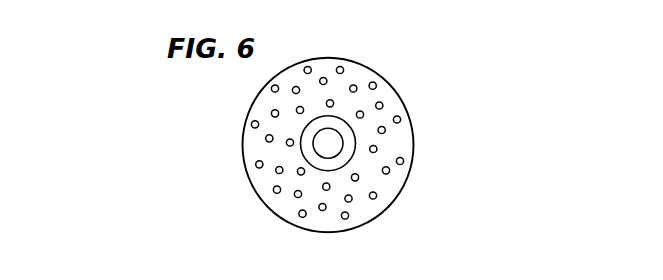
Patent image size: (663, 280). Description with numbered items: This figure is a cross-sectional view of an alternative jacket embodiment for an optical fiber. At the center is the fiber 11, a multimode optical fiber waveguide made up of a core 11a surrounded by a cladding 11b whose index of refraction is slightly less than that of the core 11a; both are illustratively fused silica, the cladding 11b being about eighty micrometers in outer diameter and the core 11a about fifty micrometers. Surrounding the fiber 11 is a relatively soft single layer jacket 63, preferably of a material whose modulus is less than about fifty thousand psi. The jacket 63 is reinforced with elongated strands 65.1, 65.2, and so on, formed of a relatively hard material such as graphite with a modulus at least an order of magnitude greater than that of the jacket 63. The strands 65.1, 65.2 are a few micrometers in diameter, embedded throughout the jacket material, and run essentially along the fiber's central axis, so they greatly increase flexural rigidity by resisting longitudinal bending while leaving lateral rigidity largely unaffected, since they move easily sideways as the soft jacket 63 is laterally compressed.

The fiber 11 is at (349, 162).
The core 11a is at (333, 137).
The cladding 11b is at (349, 139).
The soft single layer jacket 63 is at (264, 190).
The reinforcing strand 65.1 is at (260, 138).
The reinforcing strand 65.2 is at (253, 172).